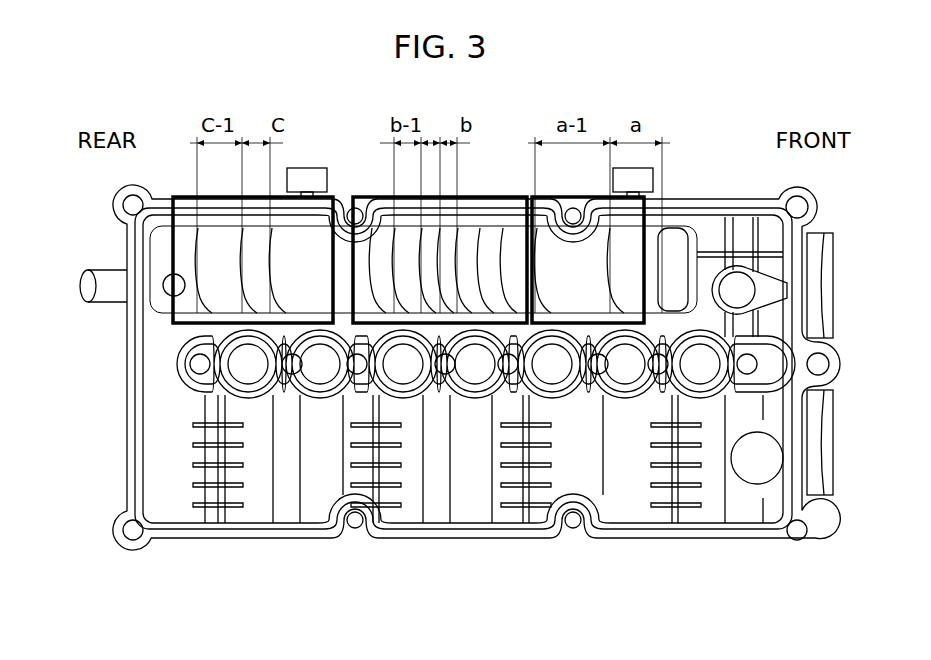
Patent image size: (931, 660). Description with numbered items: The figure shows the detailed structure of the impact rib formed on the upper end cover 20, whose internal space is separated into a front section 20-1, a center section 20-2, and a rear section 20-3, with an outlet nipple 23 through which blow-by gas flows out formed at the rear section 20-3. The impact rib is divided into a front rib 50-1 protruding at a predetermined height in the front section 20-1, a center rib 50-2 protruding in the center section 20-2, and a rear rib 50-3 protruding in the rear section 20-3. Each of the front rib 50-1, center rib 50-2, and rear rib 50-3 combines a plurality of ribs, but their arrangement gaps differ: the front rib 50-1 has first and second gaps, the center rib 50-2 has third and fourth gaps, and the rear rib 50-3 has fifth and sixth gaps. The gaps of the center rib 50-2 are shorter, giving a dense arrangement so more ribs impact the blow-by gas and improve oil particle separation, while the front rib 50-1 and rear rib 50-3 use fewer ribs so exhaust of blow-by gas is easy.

The upper end cover 20 is at (105, 405).
The outlet nipple 23 is at (82, 277).
The front section 20-1 is at (643, 313).
The center section 20-2 is at (355, 310).
The rear section 20-3 is at (160, 325).
The front rib 50-1 is at (603, 282).
The center rib 50-2 is at (420, 282).
The rear rib 50-3 is at (240, 287).